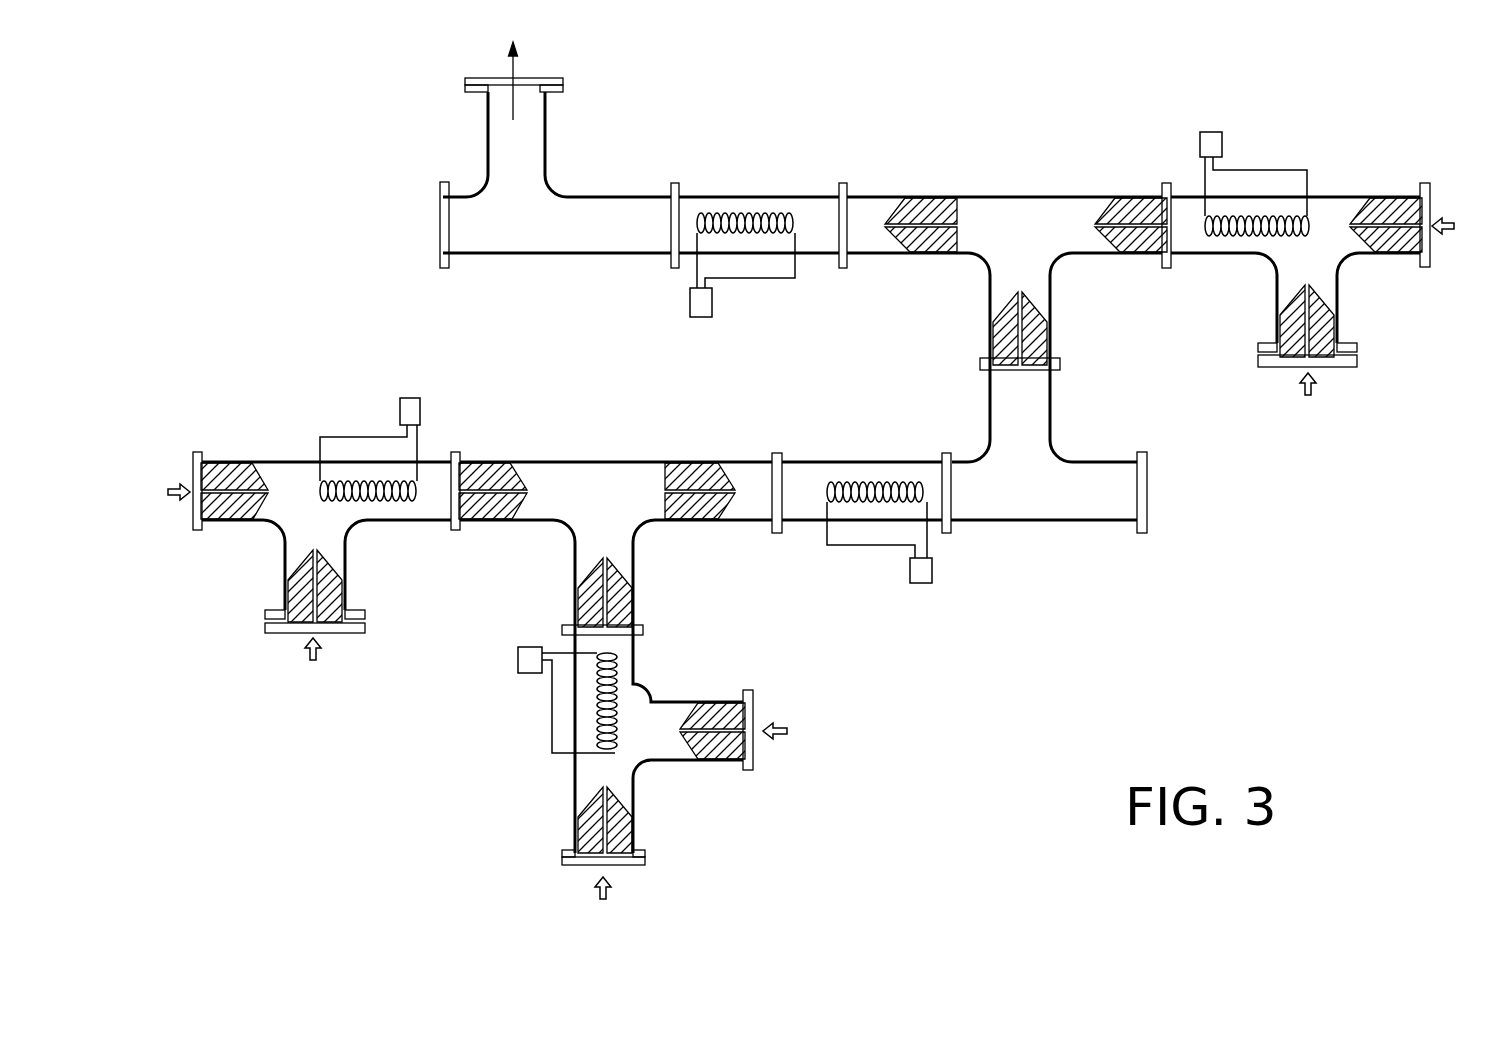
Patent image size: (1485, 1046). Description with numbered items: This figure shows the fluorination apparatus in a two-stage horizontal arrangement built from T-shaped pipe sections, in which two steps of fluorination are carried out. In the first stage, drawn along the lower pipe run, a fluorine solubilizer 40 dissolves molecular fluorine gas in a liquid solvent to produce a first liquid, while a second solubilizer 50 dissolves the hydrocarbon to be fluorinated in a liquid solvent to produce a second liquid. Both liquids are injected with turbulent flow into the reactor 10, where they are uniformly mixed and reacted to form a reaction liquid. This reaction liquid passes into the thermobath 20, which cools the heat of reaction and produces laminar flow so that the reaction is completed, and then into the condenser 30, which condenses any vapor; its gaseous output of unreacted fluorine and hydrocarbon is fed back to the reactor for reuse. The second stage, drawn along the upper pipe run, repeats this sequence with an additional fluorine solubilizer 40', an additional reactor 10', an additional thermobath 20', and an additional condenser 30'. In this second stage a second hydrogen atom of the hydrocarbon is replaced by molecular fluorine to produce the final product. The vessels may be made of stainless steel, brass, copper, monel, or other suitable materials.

The reactor 10 is at (611, 469).
The thermobath 20 is at (853, 485).
The condenser 30 is at (1066, 508).
The solubilizer 40 is at (296, 548).
The solubilizer 50 is at (655, 790).
The additional reactor 10' is at (1003, 289).
The additional thermobath 20' is at (770, 205).
The additional condenser 30' is at (566, 155).
The additional fluorine solubilizer 40' is at (1318, 268).